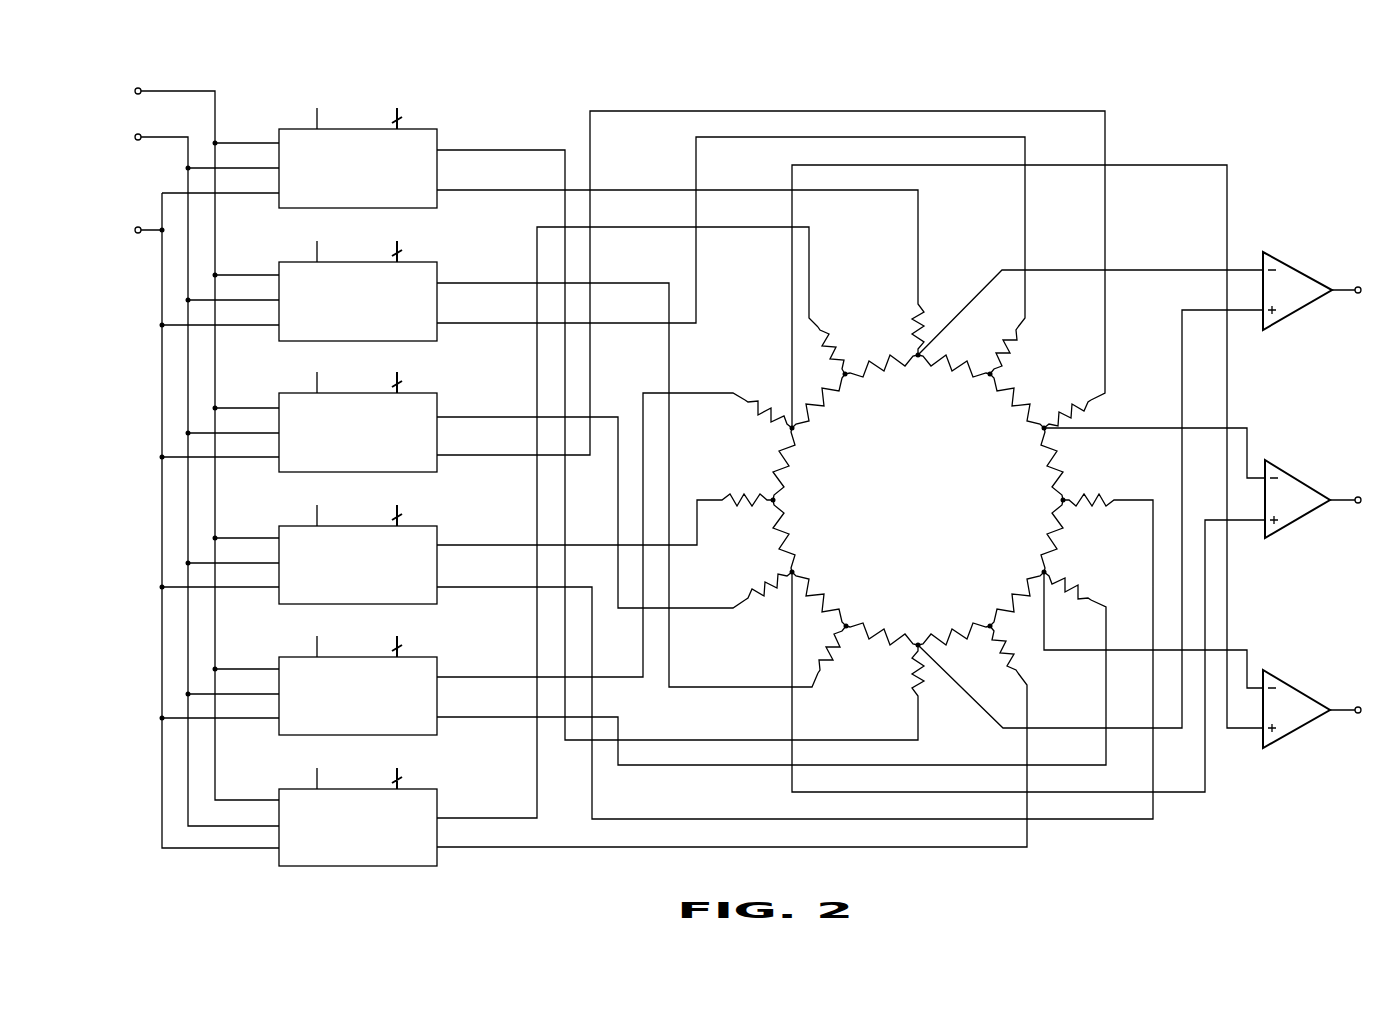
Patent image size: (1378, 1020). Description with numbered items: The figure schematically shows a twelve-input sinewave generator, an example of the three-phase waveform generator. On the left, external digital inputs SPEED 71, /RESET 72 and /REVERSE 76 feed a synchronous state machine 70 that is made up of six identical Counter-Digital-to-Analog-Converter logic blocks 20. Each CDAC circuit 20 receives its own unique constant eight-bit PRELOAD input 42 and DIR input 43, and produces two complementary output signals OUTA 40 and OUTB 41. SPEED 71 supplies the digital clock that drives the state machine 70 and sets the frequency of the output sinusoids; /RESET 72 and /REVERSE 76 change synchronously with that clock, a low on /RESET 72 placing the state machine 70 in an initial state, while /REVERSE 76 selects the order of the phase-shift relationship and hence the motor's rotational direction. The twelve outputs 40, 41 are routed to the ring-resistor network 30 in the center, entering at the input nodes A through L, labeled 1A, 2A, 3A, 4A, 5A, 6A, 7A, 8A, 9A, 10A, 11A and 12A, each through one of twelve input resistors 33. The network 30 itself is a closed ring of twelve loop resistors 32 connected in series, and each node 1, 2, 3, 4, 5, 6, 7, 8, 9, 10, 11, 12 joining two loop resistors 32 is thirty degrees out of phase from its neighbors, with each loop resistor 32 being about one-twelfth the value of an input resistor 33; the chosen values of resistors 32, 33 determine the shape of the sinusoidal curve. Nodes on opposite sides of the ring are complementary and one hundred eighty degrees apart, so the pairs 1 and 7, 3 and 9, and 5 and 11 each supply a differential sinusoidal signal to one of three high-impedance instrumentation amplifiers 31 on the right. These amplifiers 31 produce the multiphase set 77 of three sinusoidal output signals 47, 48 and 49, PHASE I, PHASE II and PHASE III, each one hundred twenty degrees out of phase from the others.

The Counter-Digital-to-Analog-Converter logic block 20 is at (296, 196).
The ring-resistor network 30 is at (927, 98).
The instrumentation amplifier 31 is at (1283, 282).
The loop resistor 32 is at (1010, 415).
The input resistor 33 is at (923, 500).
The OUTA output 40 is at (452, 152).
The OUTB output 41 is at (512, 191).
The PRELOAD(7:0) input 42 is at (452, 112).
The DIR input 43 is at (308, 118).
The sinusoidal output signal 47 is at (1355, 298).
The sinusoidal output signal 48 is at (1355, 508).
The sinusoidal output signal 49 is at (1355, 718).
The synchronous state machine 70 is at (365, 79).
The SPEED input 71 is at (123, 223).
The /RESET input 72 is at (122, 132).
The /REVERSE input 76 is at (213, 84).
The multiphase set of sinusoidal output signals 77 is at (1315, 173).
The node 1 is at (921, 366).
The node 2 is at (993, 382).
The node 3 is at (1035, 433).
The node 4 is at (1052, 500).
The node 5 is at (1043, 570).
The node 6 is at (987, 620).
The node 7 is at (922, 633).
The node 8 is at (852, 617).
The node 9 is at (802, 567).
The node 10 is at (782, 500).
The node 11 is at (797, 431).
The node 12 is at (852, 382).
The input node A 1A is at (918, 294).
The input node B 2A is at (1030, 320).
The input node C 3A is at (1108, 400).
The input node D 4A is at (1153, 499).
The input node E 5A is at (1106, 610).
The input node F 6A is at (1030, 684).
The input node G 7A is at (927, 705).
The input node H 8A is at (816, 688).
The input node I 9A is at (735, 604).
The input node J 10A is at (688, 500).
The input node K 11A is at (735, 388).
The input node L 12A is at (812, 310).